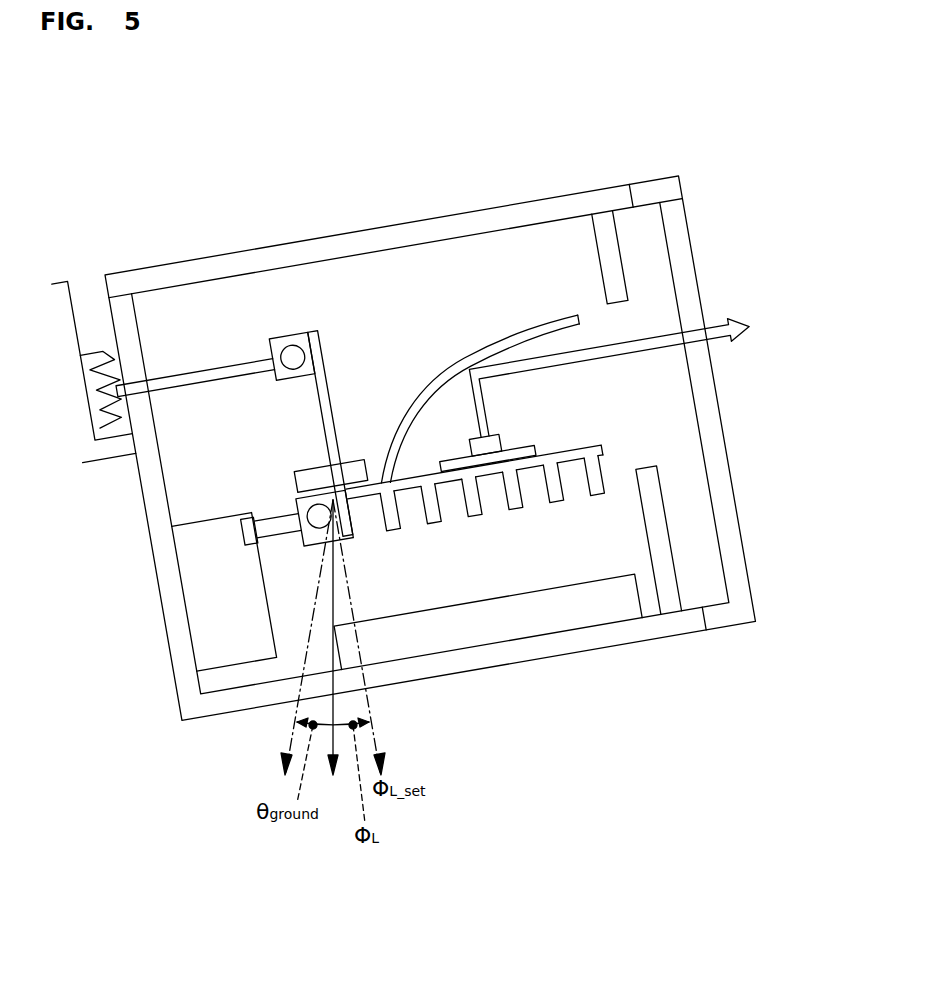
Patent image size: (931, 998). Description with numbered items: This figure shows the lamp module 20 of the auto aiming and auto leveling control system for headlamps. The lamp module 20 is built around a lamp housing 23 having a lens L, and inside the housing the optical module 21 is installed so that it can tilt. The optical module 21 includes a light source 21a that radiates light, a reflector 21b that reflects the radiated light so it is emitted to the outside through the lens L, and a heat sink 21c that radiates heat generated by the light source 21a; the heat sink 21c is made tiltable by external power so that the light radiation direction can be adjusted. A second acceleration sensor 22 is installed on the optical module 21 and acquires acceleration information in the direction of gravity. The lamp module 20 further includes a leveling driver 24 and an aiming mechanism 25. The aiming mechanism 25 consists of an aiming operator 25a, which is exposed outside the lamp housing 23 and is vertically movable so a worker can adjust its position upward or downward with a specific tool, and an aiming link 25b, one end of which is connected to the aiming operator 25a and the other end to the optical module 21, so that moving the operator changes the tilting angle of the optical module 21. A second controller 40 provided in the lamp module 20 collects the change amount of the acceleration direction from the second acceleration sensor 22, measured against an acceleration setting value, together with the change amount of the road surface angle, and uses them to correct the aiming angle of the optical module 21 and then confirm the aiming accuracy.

The lamp module 20 is at (505, 192).
The optical module 21 is at (615, 412).
The light source 21a is at (483, 441).
The reflector 21b is at (545, 334).
The heat sink 21c is at (467, 478).
The second acceleration sensor 22 is at (312, 478).
The lamp housing 23 is at (273, 257).
The leveling driver 24 is at (222, 588).
The aiming mechanism 25 is at (163, 300).
The aiming operator 25a is at (93, 355).
The aiming link 25b is at (193, 370).
The second controller 40 is at (470, 625).
The lens L is at (680, 247).